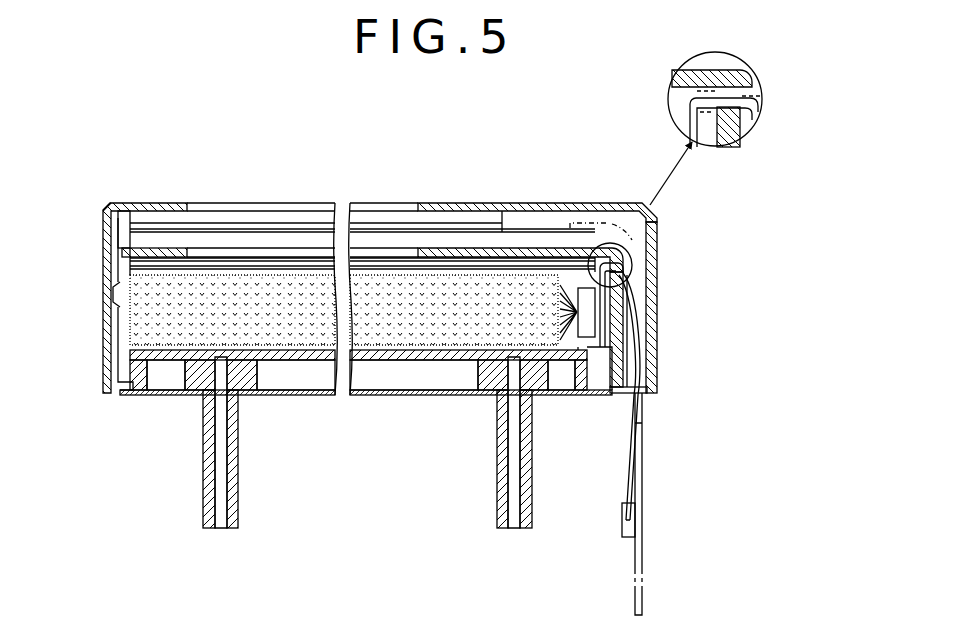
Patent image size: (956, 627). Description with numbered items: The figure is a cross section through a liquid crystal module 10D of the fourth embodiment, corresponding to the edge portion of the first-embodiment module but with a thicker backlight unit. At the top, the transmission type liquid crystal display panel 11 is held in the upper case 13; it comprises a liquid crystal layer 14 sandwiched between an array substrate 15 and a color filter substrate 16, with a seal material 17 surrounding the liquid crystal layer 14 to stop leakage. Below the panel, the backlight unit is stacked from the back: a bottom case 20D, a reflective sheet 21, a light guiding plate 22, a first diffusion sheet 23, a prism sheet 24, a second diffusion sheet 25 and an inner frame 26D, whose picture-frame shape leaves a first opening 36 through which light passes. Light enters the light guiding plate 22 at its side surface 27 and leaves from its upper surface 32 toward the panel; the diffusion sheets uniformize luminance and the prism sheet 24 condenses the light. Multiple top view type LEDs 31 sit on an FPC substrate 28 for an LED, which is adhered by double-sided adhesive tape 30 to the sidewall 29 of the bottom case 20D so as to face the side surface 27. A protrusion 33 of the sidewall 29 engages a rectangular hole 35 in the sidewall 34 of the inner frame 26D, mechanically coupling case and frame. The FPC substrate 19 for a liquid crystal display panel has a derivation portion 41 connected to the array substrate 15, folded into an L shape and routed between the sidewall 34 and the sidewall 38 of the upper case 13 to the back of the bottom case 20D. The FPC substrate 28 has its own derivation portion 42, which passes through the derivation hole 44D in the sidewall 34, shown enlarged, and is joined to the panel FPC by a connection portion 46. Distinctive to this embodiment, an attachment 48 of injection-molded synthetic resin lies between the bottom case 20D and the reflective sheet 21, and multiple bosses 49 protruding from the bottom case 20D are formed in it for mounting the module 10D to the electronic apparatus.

The liquid crystal module 10D is at (54, 145).
The transmission type liquid crystal display panel 11 is at (150, 220).
The color filter substrate 16 is at (196, 224).
The liquid crystal layer 14 is at (236, 231).
The array substrate 15 is at (274, 241).
The first opening 36 is at (303, 252).
The upper surface 32 is at (365, 276).
The second diffusion sheet 25 is at (393, 260).
The prism sheet 24 is at (437, 268).
The first diffusion sheet 23 is at (467, 272).
The seal material 17 is at (500, 230).
The inner frame 26D is at (570, 243).
The upper case 13 is at (617, 211).
The sidewall 38 is at (650, 224).
The sidewall 34 is at (620, 298).
The sidewall 29 is at (625, 323).
The FPC substrate for an LED 28 is at (622, 347).
The double-sided adhesive tape 30 is at (620, 381).
The derivation portion 42 is at (630, 440).
The FPC substrate for a liquid crystal display panel 19 is at (641, 464).
The derivation portion 41 is at (643, 582).
The connection portion 46 is at (626, 527).
The rectangular hole 35 is at (112, 292).
The protrusion 33 is at (112, 310).
The reflective sheet 21 is at (458, 316).
The light guiding plate 22 is at (468, 363).
The side surface 27 is at (558, 343).
The top view type LED 31 is at (590, 328).
The attachment 48 is at (253, 395).
The boss 49 is at (235, 490).
The bottom case 20D is at (386, 397).
The derivation hole 44D is at (748, 110).